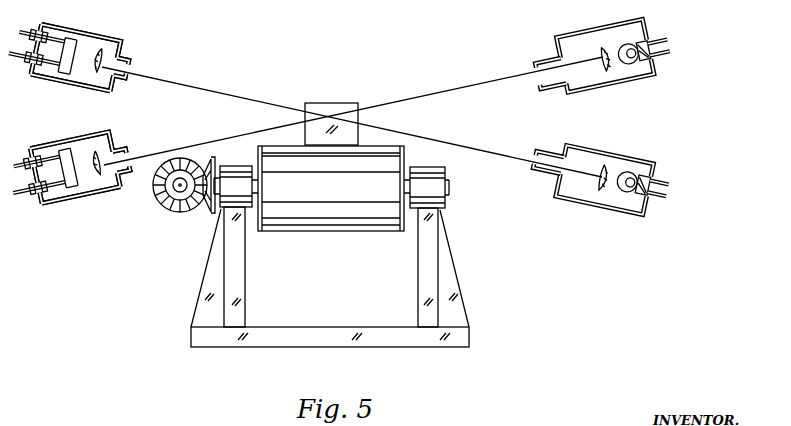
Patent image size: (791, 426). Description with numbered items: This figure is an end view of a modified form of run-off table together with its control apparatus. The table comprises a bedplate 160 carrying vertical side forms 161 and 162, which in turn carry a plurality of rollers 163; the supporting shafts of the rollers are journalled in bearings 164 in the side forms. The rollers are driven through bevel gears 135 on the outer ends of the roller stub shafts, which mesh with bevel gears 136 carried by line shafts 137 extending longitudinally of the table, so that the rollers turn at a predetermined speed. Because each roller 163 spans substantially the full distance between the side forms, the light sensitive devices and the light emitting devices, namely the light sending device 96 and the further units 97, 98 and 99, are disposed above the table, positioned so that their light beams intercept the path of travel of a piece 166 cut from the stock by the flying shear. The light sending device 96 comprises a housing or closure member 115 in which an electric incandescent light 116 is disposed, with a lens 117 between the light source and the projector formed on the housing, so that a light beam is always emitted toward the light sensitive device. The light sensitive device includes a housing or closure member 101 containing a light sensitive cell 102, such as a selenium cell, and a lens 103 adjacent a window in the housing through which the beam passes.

The light sending device 96 is at (72, 10).
The lower light source unit 97 is at (636, 245).
The lower photoelectric cell unit 98 is at (27, 219).
The upper light source unit 99 is at (633, 14).
The housing or closure member 101 is at (121, 40).
The light sensitive cell 102 is at (73, 42).
The lens 103 is at (96, 152).
The housing or closure member 115 is at (562, 146).
The electric incandescent light 116 is at (634, 44).
The lens 117 is at (606, 164).
The bevel gears 135 is at (156, 187).
The bevel gears 136 is at (157, 199).
The line shafts 137 is at (181, 184).
The bedplate 160 is at (400, 347).
The vertical side form 161 is at (245, 293).
The vertical side form 162 is at (418, 291).
The rollers 163 is at (317, 232).
The bearings 164 is at (220, 208).
The piece 166 is at (328, 103).